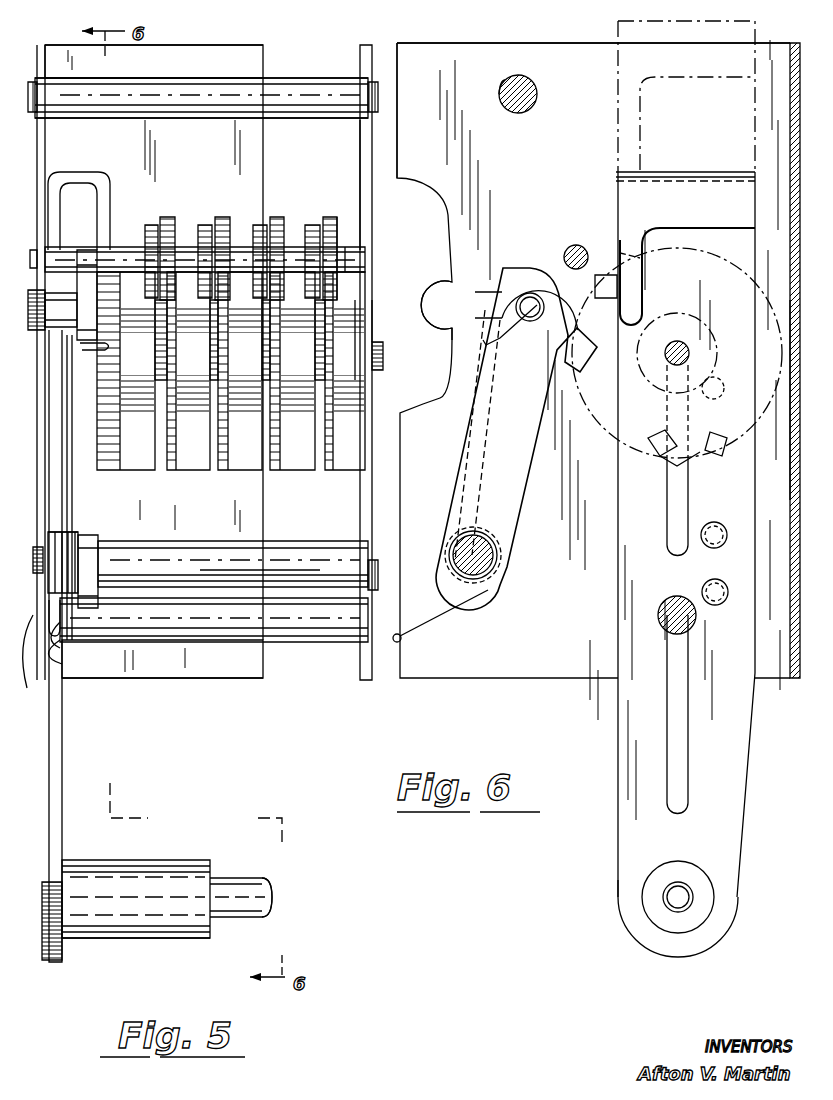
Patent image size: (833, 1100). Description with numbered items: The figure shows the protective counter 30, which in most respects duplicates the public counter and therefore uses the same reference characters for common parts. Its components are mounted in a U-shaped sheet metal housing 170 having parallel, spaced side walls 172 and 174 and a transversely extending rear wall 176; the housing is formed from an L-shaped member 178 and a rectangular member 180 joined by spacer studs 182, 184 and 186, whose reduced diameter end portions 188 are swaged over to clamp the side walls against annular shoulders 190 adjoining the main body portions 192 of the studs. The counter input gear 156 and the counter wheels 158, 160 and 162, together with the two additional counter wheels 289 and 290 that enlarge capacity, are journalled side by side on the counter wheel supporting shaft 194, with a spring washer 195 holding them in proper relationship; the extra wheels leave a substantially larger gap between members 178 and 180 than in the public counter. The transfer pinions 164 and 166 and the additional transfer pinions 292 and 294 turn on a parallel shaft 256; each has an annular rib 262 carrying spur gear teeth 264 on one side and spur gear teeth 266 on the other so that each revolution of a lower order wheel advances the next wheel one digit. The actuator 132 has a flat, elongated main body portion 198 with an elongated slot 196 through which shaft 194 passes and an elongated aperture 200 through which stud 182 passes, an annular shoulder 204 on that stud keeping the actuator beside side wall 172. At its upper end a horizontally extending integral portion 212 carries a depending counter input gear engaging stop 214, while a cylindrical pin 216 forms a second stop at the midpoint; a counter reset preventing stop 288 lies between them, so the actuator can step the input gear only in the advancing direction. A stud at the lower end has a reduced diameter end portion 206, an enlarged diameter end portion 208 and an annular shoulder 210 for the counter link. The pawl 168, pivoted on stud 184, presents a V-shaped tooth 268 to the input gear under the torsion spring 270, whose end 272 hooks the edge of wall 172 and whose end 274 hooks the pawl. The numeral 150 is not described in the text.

In FIG. 5, the protective counter 30 is at (209, 46).
In FIG. 6, the protective counter 30 is at (485, 42).
In FIG. 5, the actuator 132 is at (66, 778).
In FIG. 6, the actuator 132 is at (616, 826).
In FIG. 5, the pin 150 is at (272, 898).
In FIG. 6, the pin 150 is at (702, 903).
In FIG. 5, the counter input gear 156 is at (106, 470).
In FIG. 5, the counter wheel 158 is at (156, 470).
In FIG. 5, the counter wheel 160 is at (204, 470).
In FIG. 5, the counter wheel 162 is at (256, 470).
In FIG. 5, the transfer pinion 164 is at (152, 222).
In FIG. 5, the transfer pinion 166 is at (204, 222).
In FIG. 5, the spring-biased pawl 168 is at (88, 534).
In FIG. 6, the spring-biased pawl 168 is at (524, 428).
In FIG. 5, the sheet metal housing 170 is at (142, 684).
In FIG. 6, the sheet metal housing 170 is at (502, 684).
In FIG. 5, the side wall 172 is at (45, 142).
In FIG. 6, the side wall 172 is at (578, 30).
In FIG. 5, the side wall 174 is at (360, 150).
In FIG. 5, the rear wall 176 is at (262, 62).
In FIG. 6, the rear wall 176 is at (790, 484).
In FIG. 5, the L-shaped member 178 is at (218, 680).
In FIG. 6, the L-shaped member 178 is at (793, 684).
In FIG. 5, the rectangular member 180 is at (358, 684).
In FIG. 5, the spacer stud 182 is at (266, 646).
In FIG. 5, the spacer stud 184 is at (218, 522).
In FIG. 6, the spacer stud 184 is at (497, 560).
In FIG. 5, the spacer stud 186 is at (200, 95).
In FIG. 6, the spacer stud 186 is at (500, 82).
In FIG. 5, the reduced diameter end portion 188 is at (36, 96).
In FIG. 6, the reduced diameter end portion 188 is at (392, 93).
In FIG. 5, the annular shoulder 190 is at (45, 98).
In FIG. 5, the main body portion 192 is at (172, 118).
In FIG. 6, the main body portion 192 is at (535, 82).
In FIG. 5, the counter wheel supporting shaft 194 is at (384, 364).
In FIG. 5, the spring washer 195 is at (74, 376).
In FIG. 6, the elongated slot 196 is at (668, 478).
In FIG. 6, the main body portion 198 is at (630, 546).
In FIG. 6, the elongated aperture 200 is at (680, 757).
In FIG. 5, the annular shoulder 204 is at (60, 643).
In FIG. 5, the reduced diameter end portion 206 is at (246, 878).
In FIG. 6, the reduced diameter end portion 206 is at (700, 888).
In FIG. 5, the enlarged diameter end portion 208 is at (160, 860).
In FIG. 6, the enlarged diameter end portion 208 is at (625, 898).
In FIG. 5, the annular shoulder 210 is at (212, 930).
In FIG. 6, the annular shoulder 210 is at (684, 864).
In FIG. 5, the horizontally extending integral portion 212 is at (85, 178).
In FIG. 6, the horizontally extending integral portion 212 is at (705, 178).
In FIG. 5, the counter input gear engaging stop 214 is at (104, 232).
In FIG. 6, the counter input gear engaging stop 214 is at (628, 240).
In FIG. 6, the cylindrical pin 216 is at (702, 592).
In FIG. 5, the shaft 256 is at (372, 245).
In FIG. 6, the shaft 256 is at (566, 255).
In FIG. 5, the annular rib 262 is at (335, 231).
In FIG. 5, the spur gear teeth 264 is at (340, 316).
In FIG. 6, the spur gear teeth 264 is at (427, 326).
In FIG. 5, the spur gear teeth 266 is at (362, 297).
In FIG. 6, the spur gear teeth 266 is at (427, 305).
In FIG. 6, the V-shaped tooth 268 is at (552, 292).
In FIG. 5, the torsion spring 270 is at (80, 557).
In FIG. 6, the torsion spring 270 is at (492, 590).
In FIG. 5, the torsion spring end 272 is at (58, 658).
In FIG. 6, the torsion spring end 272 is at (398, 642).
In FIG. 5, the torsion spring end 274 is at (110, 345).
In FIG. 6, the torsion spring end 274 is at (492, 344).
In FIG. 6, the counter reset preventing stop 288 is at (712, 548).
In FIG. 5, the additional counter wheel 289 is at (300, 470).
In FIG. 5, the additional counter wheel 290 is at (346, 470).
In FIG. 5, the additional transfer pinion 292 is at (250, 222).
In FIG. 5, the additional transfer pinion 294 is at (310, 222).